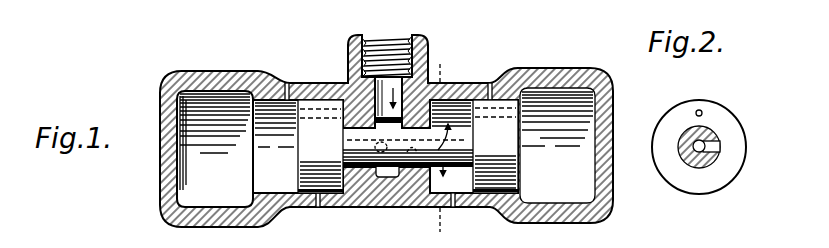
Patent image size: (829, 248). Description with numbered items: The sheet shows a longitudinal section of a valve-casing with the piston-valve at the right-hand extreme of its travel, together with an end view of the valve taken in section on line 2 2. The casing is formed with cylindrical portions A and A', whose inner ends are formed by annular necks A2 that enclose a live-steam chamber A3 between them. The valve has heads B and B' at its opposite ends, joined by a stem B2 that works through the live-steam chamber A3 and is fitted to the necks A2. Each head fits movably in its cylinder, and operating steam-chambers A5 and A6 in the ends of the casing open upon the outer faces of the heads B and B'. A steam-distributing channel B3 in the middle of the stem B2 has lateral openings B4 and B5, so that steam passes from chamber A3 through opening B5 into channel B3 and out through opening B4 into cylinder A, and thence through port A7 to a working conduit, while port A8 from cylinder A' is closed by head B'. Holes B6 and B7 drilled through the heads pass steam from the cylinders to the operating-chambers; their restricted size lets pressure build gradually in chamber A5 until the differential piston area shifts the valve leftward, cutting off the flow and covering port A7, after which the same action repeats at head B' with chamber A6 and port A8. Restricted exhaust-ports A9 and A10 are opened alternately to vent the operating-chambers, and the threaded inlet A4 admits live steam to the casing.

In FIG. 1, the cylindrical portion A is at (386, 131).
In FIG. 1, the cylindrical portion A' is at (274, 147).
In FIG. 1, the annular neck A2 is at (418, 173).
In FIG. 1, the live-steam chamber A3 is at (385, 175).
In FIG. 1, the threaded inlet port A4 is at (387, 87).
In FIG. 1, the operating steam-chamber A5 is at (557, 145).
In FIG. 1, the operating steam-chamber A6 is at (215, 144).
In FIG. 1, the port A7 is at (453, 208).
In FIG. 1, the port A8 is at (318, 208).
In FIG. 1, the exhaust-port A9 is at (490, 83).
In FIG. 1, the exhaust-port A10 is at (287, 83).
In FIG. 1, the head B is at (504, 228).
In FIG. 2, the head B is at (708, 147).
In FIG. 1, the head B' is at (320, 146).
In FIG. 1, the stem B2 is at (465, 127).
In FIG. 2, the stem B2 is at (712, 164).
In FIG. 1, the steam-distributing channel B3 is at (397, 170).
In FIG. 2, the steam-distributing channel B3 is at (694, 142).
In FIG. 1, the lateral opening B4 is at (409, 150).
In FIG. 2, the lateral opening B4 is at (717, 147).
In FIG. 1, the lateral opening B5 is at (380, 143).
In FIG. 1, the hole B6 is at (500, 118).
In FIG. 2, the hole B6 is at (702, 111).
In FIG. 1, the hole B7 is at (304, 122).
In FIG. 1, the section line 2 is at (438, 152).